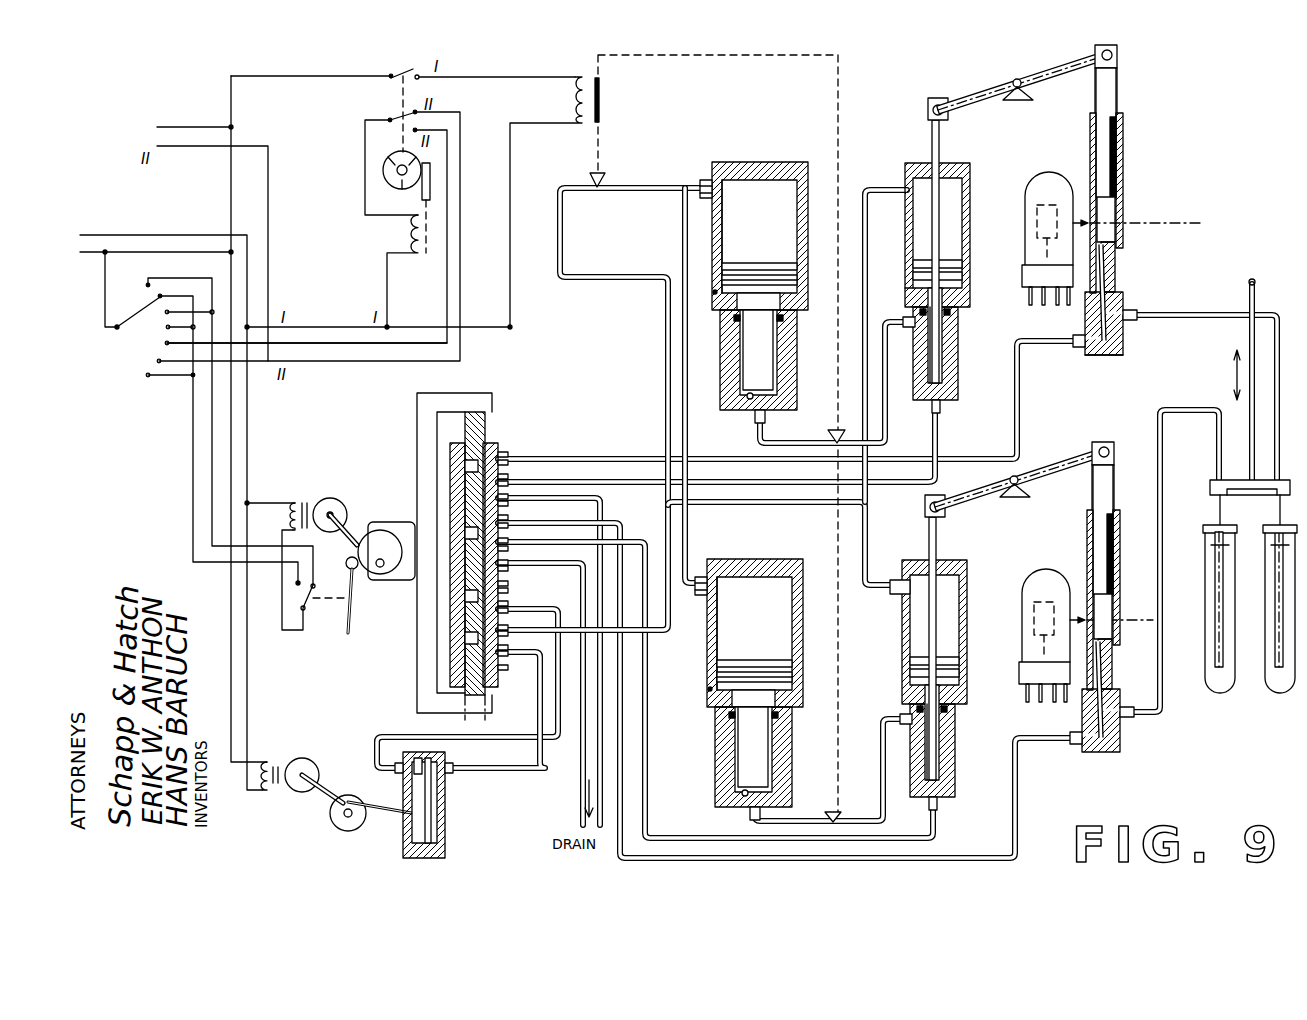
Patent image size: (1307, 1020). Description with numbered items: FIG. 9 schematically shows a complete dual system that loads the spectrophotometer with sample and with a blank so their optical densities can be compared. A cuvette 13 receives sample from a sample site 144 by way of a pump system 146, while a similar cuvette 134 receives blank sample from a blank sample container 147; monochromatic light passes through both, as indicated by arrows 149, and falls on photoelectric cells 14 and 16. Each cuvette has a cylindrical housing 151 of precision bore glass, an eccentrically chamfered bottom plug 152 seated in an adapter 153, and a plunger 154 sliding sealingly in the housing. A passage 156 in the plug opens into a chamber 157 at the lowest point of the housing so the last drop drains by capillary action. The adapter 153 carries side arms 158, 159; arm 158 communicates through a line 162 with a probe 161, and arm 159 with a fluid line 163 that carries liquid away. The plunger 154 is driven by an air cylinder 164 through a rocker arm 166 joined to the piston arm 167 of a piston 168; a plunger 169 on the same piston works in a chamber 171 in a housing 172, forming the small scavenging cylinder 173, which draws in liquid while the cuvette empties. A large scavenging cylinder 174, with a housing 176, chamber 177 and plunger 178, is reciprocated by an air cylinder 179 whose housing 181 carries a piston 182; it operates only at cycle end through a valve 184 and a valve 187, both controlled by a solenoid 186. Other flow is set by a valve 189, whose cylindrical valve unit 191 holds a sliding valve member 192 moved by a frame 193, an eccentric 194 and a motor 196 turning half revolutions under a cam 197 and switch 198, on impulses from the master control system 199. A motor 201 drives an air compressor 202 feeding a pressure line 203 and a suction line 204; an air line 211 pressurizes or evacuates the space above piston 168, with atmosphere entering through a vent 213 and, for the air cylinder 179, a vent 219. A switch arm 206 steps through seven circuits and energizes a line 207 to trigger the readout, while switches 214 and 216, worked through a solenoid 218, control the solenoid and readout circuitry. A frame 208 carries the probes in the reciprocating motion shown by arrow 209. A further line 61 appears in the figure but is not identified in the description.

The cuvette 13 is at (1109, 217).
The photoelectric cell 14 is at (1047, 178).
The photoelectric cell 16 is at (1043, 582).
The conduit 61 is at (747, 485).
The cuvette 134 is at (1088, 532).
The sample site 144 is at (1283, 698).
The pump system 146 is at (950, 91).
The blank sample container 147 is at (1242, 629).
The arrows 149 is at (1198, 223).
The cylindrical housing 151 is at (1117, 255).
The bottom plug 152 is at (1110, 270).
The adapter 153 is at (1105, 357).
The plunger 154 is at (1120, 113).
The passage 156 is at (1125, 300).
The chamber 157 is at (1107, 217).
The side arm 158 is at (1133, 324).
The side arm 159 is at (1077, 349).
The probe 161 is at (1222, 592).
The line 162 is at (1205, 313).
The fluid line 163 is at (1020, 430).
The air cylinder 164 is at (921, 223).
The rocker arm 166 is at (968, 94).
The piston arm 167 is at (941, 148).
The piston 168 is at (912, 272).
The plunger 169 is at (937, 350).
The chamber 171 is at (942, 408).
The housing 172 is at (958, 382).
The small scavenging cylinder 173 is at (884, 190).
The large scavenging cylinder 174 is at (707, 172).
The housing 176 is at (745, 377).
The chamber 177 is at (750, 398).
The plunger 178 is at (776, 373).
The air cylinder 179 is at (723, 222).
The housing 181 is at (716, 238).
The piston 182 is at (757, 268).
The valve 184 is at (603, 177).
The solenoid 186 is at (600, 103).
The valve 187 is at (833, 438).
The valve 189 is at (408, 466).
The cylindrical valve unit 191 is at (500, 445).
The valve member 192 is at (483, 424).
The frame 193 is at (370, 585).
The eccentric 194 is at (378, 530).
The motor 196 is at (345, 483).
The cam 197 is at (351, 630).
The switch 198 is at (302, 626).
The master control system 199 is at (135, 346).
The motor 201 is at (296, 785).
The air compressor 202 is at (444, 796).
The pressure line 203 is at (404, 733).
The suction line 204 is at (492, 772).
The switch arm 206 is at (142, 322).
The line 207 is at (155, 134).
The frame 208 is at (1250, 452).
The arrow 209 is at (1234, 372).
The air line 211 is at (663, 517).
The vent 213 is at (905, 290).
The switch 214 is at (400, 74).
The switch 216 is at (387, 118).
The solenoid 218 is at (412, 238).
The vent 219 is at (712, 292).